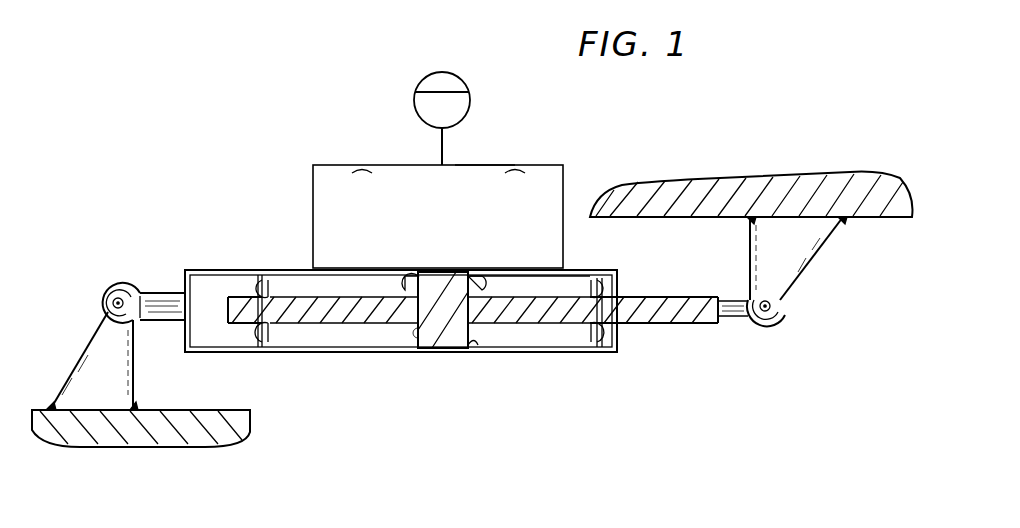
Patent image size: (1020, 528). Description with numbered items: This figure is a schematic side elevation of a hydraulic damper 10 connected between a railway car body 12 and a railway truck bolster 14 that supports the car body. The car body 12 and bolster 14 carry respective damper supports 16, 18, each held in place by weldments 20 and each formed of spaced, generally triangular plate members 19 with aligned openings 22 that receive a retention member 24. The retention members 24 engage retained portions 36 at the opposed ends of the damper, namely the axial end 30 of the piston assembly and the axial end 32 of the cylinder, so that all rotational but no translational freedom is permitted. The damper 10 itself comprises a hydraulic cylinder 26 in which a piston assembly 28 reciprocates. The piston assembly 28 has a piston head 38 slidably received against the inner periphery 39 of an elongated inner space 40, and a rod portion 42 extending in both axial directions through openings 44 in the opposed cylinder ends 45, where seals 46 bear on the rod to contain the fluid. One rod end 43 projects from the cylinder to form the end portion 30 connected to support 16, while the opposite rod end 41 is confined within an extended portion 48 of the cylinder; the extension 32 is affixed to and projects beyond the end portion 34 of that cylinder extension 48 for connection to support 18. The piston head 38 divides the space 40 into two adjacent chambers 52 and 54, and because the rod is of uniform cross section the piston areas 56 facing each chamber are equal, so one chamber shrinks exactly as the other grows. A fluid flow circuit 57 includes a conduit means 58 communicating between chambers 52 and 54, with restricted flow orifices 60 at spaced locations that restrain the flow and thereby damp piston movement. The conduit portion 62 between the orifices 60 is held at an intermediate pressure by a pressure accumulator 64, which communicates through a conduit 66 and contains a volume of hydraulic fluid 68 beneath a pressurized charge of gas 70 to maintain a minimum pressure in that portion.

The hydraulic damper 10 is at (543, 360).
The railway car body 12 is at (820, 185).
The railway truck bolster 14 is at (140, 432).
The damper support 16 is at (808, 240).
The damper support 18 is at (78, 372).
The triangular plate member 19 is at (118, 372).
The weldment 20 is at (140, 408).
The opening 22 is at (113, 303).
The retention member 24 is at (112, 285).
The hydraulic cylinder 26 is at (366, 352).
The piston assembly 28 is at (432, 345).
The axial end of piston assembly 30 is at (675, 285).
The axial end of cylinder 32 is at (140, 290).
The end portion of cylinder extension 34 is at (180, 290).
The retained portion 36 is at (104, 292).
The piston head 38 is at (472, 338).
The inner periphery 39 is at (468, 330).
The inner space 40 is at (533, 290).
The end of piston rod 41 is at (250, 325).
The rod portion 42 is at (400, 326).
The end of piston rod 43 is at (660, 310).
The opening 44 is at (269, 284).
The cylinder end 45 is at (259, 288).
The seal 46 is at (264, 325).
The extended portion of cylinder 48 is at (226, 272).
The chamber 52 is at (398, 275).
The chamber 54 is at (502, 285).
The piston area 56 is at (480, 272).
The fluid flow circuit 57 is at (302, 187).
The fluid flow conduit means 58 is at (565, 170).
The restricted flow orifice 60 is at (362, 158).
The conduit portion 62 is at (472, 164).
The pressure accumulator 64 is at (468, 92).
The conduit 66 is at (440, 147).
The hydraulic fluid 68 is at (433, 111).
The pressurized charge of gas 70 is at (442, 80).